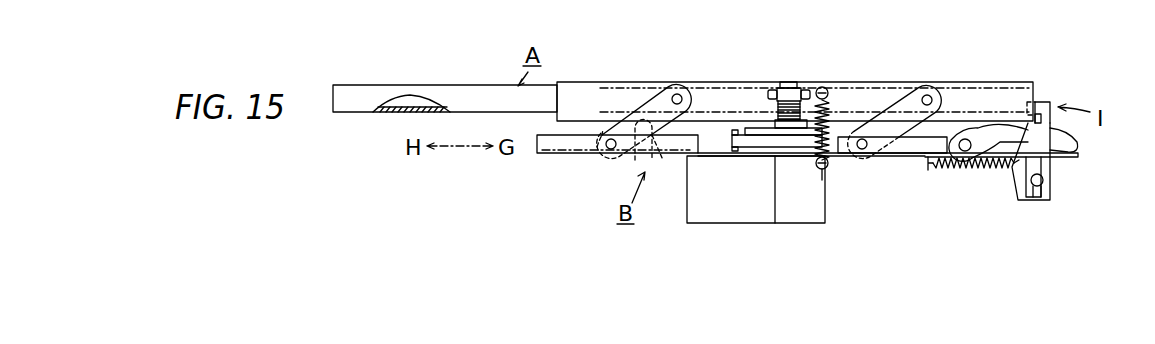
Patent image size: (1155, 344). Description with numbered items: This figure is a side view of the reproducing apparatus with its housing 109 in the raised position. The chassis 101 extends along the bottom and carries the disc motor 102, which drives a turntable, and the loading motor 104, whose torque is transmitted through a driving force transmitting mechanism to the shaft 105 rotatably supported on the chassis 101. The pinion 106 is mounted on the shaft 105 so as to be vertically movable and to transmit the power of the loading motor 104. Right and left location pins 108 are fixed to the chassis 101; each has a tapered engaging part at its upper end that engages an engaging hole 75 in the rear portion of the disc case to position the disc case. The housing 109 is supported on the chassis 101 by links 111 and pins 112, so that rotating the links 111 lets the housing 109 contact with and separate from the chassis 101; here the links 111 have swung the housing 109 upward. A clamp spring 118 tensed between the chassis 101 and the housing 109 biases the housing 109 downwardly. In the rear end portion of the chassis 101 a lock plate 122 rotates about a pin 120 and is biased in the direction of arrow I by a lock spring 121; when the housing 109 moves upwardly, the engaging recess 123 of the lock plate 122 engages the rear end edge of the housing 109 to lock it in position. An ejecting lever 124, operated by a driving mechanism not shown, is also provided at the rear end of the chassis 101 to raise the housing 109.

The engaging hole 75 is at (404, 113).
The chassis 101 is at (560, 155).
The disc motor 102 is at (826, 208).
The loading motor 104 is at (750, 223).
The shaft 105 is at (796, 81).
The pinion 106 is at (773, 90).
The location pin 108 is at (641, 156).
The housing 109 is at (600, 82).
The link 111 is at (632, 108).
The pin 112 is at (678, 94).
The clamp spring 118 is at (812, 143).
The pin 120 is at (1049, 186).
The lock spring 121 is at (970, 170).
The lock plate 122 is at (1055, 125).
The engaging recess 123 is at (1030, 118).
The ejecting lever 124 is at (1079, 157).